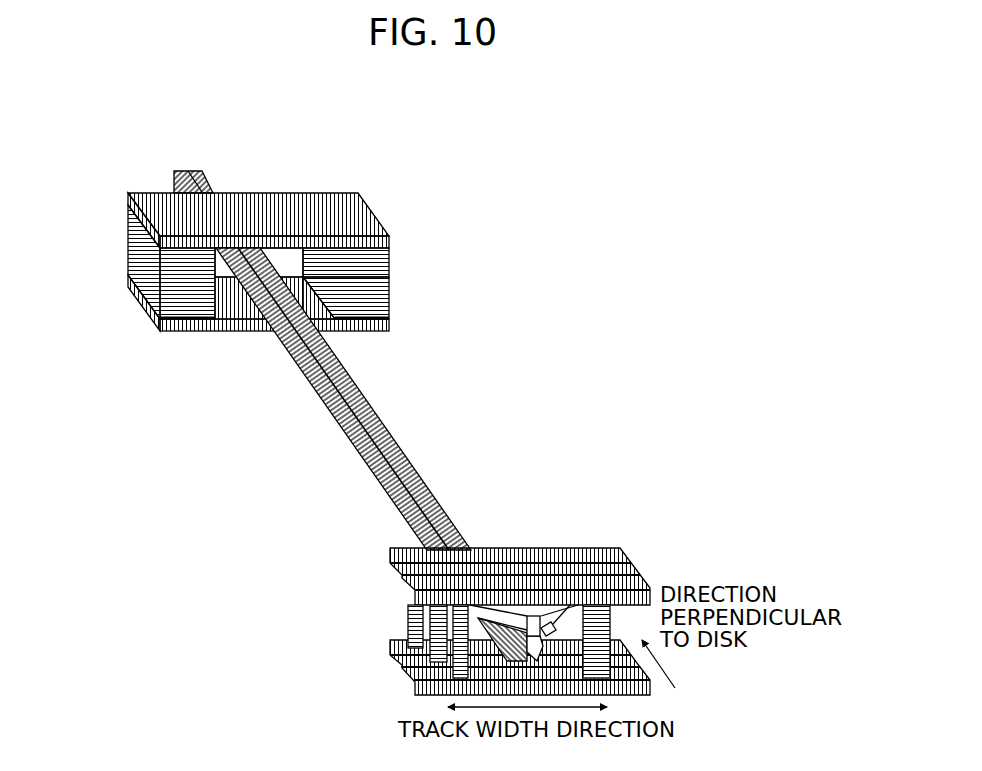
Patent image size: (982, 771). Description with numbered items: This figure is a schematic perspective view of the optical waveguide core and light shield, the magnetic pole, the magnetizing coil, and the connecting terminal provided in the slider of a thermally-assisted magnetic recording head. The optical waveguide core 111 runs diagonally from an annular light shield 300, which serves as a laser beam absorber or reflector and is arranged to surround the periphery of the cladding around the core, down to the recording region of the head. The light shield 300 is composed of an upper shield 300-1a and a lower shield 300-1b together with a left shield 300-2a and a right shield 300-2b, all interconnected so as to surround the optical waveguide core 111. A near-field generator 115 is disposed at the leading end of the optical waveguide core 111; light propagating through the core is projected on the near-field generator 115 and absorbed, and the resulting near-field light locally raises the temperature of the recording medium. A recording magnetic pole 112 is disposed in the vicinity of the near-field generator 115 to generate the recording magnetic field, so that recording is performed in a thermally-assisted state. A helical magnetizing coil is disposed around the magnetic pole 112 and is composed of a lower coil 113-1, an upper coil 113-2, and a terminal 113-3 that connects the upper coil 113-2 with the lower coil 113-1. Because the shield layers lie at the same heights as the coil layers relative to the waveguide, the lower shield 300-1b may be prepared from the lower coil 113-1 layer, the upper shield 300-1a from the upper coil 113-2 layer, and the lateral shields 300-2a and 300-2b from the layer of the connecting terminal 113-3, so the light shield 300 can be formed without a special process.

The annular light shield 300 is at (120, 187).
The upper shield 300-1a is at (352, 208).
The lower shield 300-1b is at (390, 325).
The left shield 300-2a is at (180, 305).
The right shield 300-2b is at (357, 283).
The optical waveguide core 111 is at (440, 507).
The recording magnetic pole 112 is at (405, 647).
The lower coil 113-1 is at (408, 683).
The upper coil 113-2 is at (390, 556).
The terminal 113-3 is at (410, 607).
The near-field generator 115 is at (600, 657).